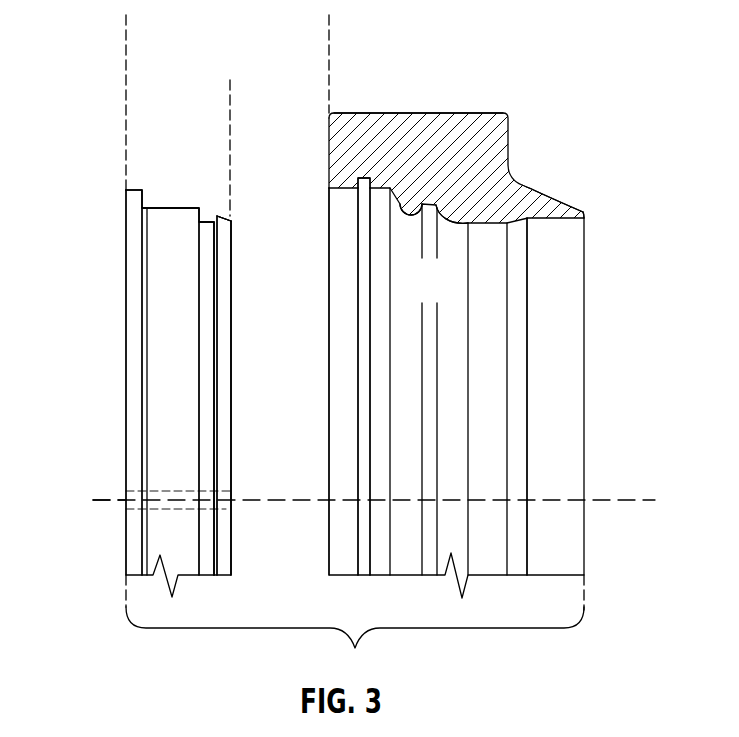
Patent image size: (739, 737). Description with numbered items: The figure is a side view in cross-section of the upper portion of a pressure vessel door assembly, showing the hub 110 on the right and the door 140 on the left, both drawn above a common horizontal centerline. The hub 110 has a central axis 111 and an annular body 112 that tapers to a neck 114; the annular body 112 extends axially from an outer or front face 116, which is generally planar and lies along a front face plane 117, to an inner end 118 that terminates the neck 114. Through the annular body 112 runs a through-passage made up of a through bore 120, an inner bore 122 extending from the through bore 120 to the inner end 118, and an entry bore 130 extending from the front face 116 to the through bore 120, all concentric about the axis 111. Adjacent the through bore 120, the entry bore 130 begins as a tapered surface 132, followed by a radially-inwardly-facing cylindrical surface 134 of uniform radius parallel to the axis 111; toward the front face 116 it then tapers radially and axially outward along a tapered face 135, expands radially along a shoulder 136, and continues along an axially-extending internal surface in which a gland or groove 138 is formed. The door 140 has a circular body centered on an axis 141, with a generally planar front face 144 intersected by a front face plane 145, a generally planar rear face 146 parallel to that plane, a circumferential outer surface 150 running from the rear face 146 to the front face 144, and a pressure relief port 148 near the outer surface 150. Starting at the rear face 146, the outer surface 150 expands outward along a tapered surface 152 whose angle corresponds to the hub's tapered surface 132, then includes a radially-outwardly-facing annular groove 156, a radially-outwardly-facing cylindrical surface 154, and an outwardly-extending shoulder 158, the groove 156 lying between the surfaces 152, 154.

The hub 110 is at (372, 128).
The central axis 111 is at (310, 498).
The annular body 112 is at (487, 121).
The neck 114 is at (553, 206).
The front face 116 is at (328, 126).
The front face plane 117 is at (328, 33).
The inner end 118 is at (578, 211).
The through bore 120 is at (492, 365).
The inner bore 122 is at (538, 220).
The entry bore 130 is at (327, 266).
The tapered surface 132 is at (466, 205).
The cylindrical surface 134 is at (462, 213).
The tapered face 135 is at (415, 205).
The shoulder 136 is at (357, 191).
The groove 138 is at (365, 325).
The door 140 is at (133, 250).
The axis 141 is at (100, 498).
The front face 144 is at (125, 325).
The front face plane 145 is at (125, 45).
The rear face 146 is at (237, 353).
The pressure relief port 148 is at (220, 490).
The circumferential outer surface 150 is at (230, 80).
The tapered surface 152 is at (222, 208).
The cylindrical surface 154 is at (177, 203).
The groove 156 is at (207, 238).
The shoulder 158 is at (145, 200).